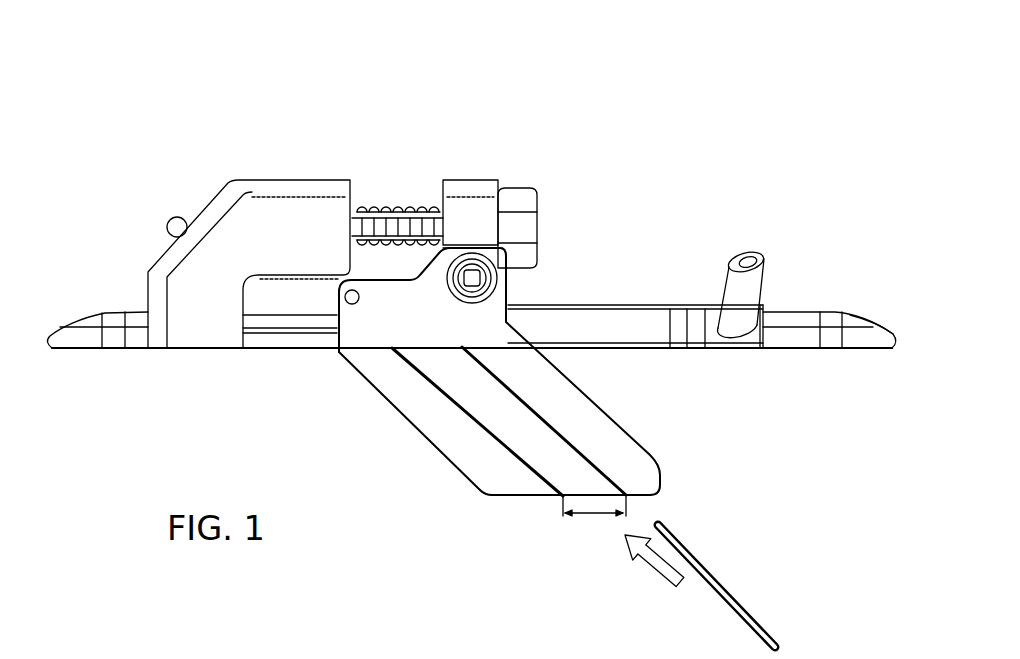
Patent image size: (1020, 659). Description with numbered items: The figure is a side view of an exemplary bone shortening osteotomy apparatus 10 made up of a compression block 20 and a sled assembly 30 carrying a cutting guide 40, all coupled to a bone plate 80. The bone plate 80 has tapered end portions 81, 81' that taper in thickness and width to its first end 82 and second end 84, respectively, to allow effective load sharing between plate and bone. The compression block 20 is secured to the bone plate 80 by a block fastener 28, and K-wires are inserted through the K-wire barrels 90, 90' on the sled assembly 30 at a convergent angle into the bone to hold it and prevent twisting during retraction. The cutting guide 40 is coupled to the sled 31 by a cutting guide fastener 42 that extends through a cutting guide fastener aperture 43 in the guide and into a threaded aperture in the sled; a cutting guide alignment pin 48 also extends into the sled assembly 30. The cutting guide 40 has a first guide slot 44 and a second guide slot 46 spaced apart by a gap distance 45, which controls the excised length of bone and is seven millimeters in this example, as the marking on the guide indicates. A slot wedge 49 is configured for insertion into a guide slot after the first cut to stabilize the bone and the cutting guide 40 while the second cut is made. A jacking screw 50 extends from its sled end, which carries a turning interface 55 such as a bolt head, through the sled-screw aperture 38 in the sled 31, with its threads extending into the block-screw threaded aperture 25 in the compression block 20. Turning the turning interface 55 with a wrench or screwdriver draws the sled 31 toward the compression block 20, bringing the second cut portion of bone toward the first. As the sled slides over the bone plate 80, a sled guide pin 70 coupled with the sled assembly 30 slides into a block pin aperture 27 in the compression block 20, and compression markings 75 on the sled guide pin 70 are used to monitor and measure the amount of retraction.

The bone shortening osteotomy apparatus 10 is at (176, 93).
The compression block 20 is at (270, 198).
The block-screw threaded aperture 25 is at (355, 207).
The block pin apertures 27 is at (342, 325).
The block fastener 28 is at (172, 220).
The sled assembly 30 is at (652, 307).
The sled 31 is at (720, 352).
The sled-screw aperture 38 is at (445, 193).
The cutting guide 40 is at (557, 390).
The cutting guide fastener 42 is at (480, 278).
The cutting guide fastener aperture 43 is at (492, 270).
The first guide slot 44 is at (560, 508).
The gap distance 45 is at (607, 520).
The second guide slot 46 is at (633, 500).
The cutting guide alignment pin 48 is at (346, 305).
The slot wedge 49 is at (740, 603).
The jacking screw 50 is at (400, 207).
The turning interface 55 is at (520, 207).
The sled guide pin 70 is at (437, 262).
The compression markings 75 is at (345, 310).
The bone plate 80 is at (818, 313).
The tapered end portion 81 is at (97, 284).
The tapered end portion 81' is at (892, 281).
The first end 82 is at (46, 348).
The second end 84 is at (880, 352).
The K-wire barrel 90 is at (741, 239).
The K-wire barrel 90' is at (773, 211).